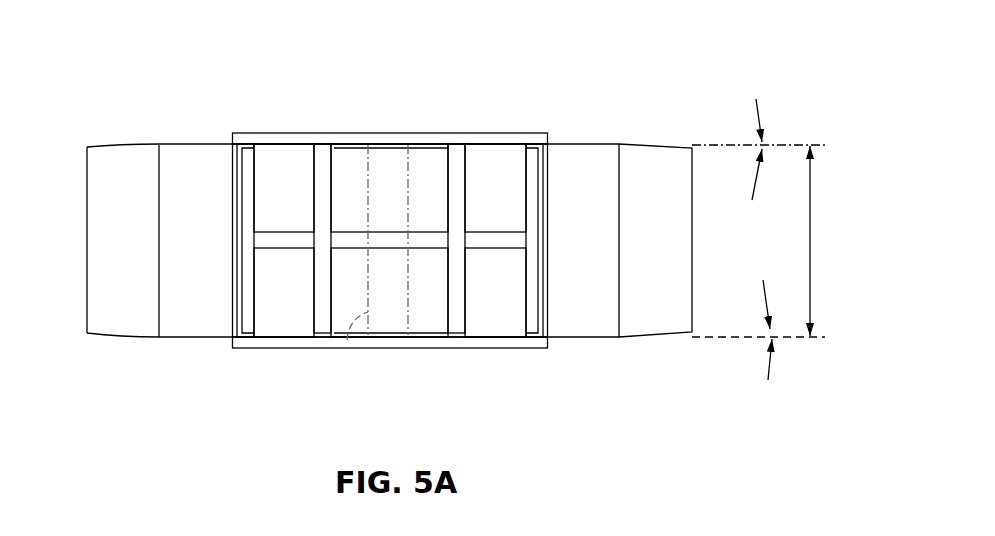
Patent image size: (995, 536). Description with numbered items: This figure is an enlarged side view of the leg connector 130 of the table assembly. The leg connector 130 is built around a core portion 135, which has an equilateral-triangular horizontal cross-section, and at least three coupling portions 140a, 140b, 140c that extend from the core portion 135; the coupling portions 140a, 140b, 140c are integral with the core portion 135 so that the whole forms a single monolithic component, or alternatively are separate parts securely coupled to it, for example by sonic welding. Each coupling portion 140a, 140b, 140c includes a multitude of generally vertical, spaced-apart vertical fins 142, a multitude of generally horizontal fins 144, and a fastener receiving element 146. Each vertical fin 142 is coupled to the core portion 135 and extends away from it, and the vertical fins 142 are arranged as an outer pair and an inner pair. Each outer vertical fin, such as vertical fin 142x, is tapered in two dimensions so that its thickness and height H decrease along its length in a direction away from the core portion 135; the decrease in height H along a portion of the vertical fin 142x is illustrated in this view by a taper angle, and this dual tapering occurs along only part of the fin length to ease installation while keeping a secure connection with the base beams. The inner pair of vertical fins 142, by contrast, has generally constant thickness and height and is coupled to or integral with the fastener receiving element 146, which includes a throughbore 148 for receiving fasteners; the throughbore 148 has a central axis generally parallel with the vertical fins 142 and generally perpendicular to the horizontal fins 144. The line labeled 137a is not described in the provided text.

The leg connector 130 is at (152, 43).
The core portion 135 is at (517, 132).
The longitudinal axis / centerline 137a is at (404, 131).
The coupling portion 140a is at (404, 350).
The coupling portion 140b is at (645, 355).
The coupling portion 140c is at (138, 355).
The vertical fins 142 is at (175, 332).
The vertical fin 142x is at (598, 330).
The horizontal fins 144 is at (278, 237).
The fastener receiving element 146 is at (423, 177).
The throughbore 148 is at (347, 340).
The height H is at (830, 212).